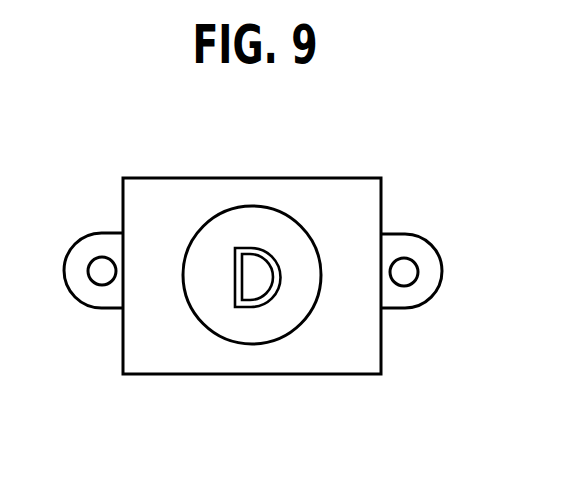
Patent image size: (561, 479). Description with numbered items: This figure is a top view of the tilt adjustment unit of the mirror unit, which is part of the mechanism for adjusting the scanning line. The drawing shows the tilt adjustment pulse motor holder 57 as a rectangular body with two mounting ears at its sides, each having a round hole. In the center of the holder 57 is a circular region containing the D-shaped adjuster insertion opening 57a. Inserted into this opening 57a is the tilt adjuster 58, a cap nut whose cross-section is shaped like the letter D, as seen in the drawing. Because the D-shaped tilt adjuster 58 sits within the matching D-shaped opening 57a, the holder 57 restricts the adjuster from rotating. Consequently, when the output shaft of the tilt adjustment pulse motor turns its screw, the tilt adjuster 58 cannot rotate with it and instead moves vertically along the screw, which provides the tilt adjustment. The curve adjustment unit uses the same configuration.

The tilt adjustment pulse motor holder 57 is at (381, 202).
The D-shaped adjuster insertion opening 57a is at (250, 248).
The tilt adjuster 58 is at (262, 307).